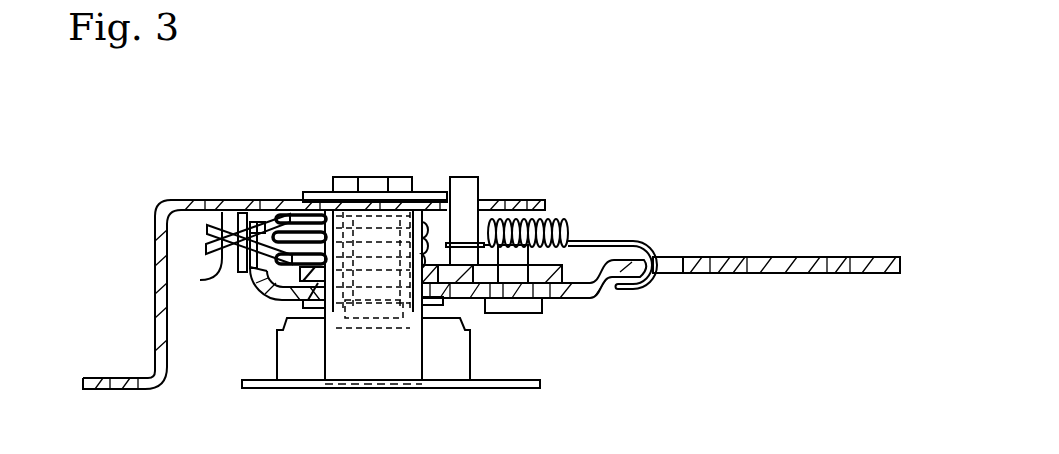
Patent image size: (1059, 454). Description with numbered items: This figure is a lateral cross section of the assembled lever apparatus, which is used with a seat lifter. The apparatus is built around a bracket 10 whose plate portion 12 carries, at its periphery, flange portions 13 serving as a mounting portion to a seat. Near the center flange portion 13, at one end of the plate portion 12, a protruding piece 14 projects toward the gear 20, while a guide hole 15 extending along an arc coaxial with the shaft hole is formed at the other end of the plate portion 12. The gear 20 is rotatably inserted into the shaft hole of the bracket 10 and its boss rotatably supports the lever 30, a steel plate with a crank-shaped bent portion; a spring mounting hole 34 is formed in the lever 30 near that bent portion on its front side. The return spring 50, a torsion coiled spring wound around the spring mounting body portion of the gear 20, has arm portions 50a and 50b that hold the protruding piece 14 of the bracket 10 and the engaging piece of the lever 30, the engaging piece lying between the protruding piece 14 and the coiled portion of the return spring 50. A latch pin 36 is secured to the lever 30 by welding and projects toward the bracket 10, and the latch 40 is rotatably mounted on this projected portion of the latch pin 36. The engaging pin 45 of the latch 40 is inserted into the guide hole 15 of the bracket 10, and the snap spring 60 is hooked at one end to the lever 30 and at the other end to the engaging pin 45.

The bracket 10 is at (153, 302).
The plate portion 12 is at (196, 200).
The flange portion 13 is at (93, 378).
The protruding piece 14 is at (247, 270).
The guide hole 15 is at (490, 203).
The gear 20 is at (307, 275).
The lever 30 is at (817, 257).
The spring mounting hole 34 is at (670, 274).
The latch pin 36 is at (517, 313).
The latch 40 is at (559, 277).
The engaging pin 45 is at (463, 176).
The return spring 50 is at (288, 222).
The arm portion 50a is at (200, 280).
The arm portion 50b is at (219, 220).
The snap spring 60 is at (556, 219).